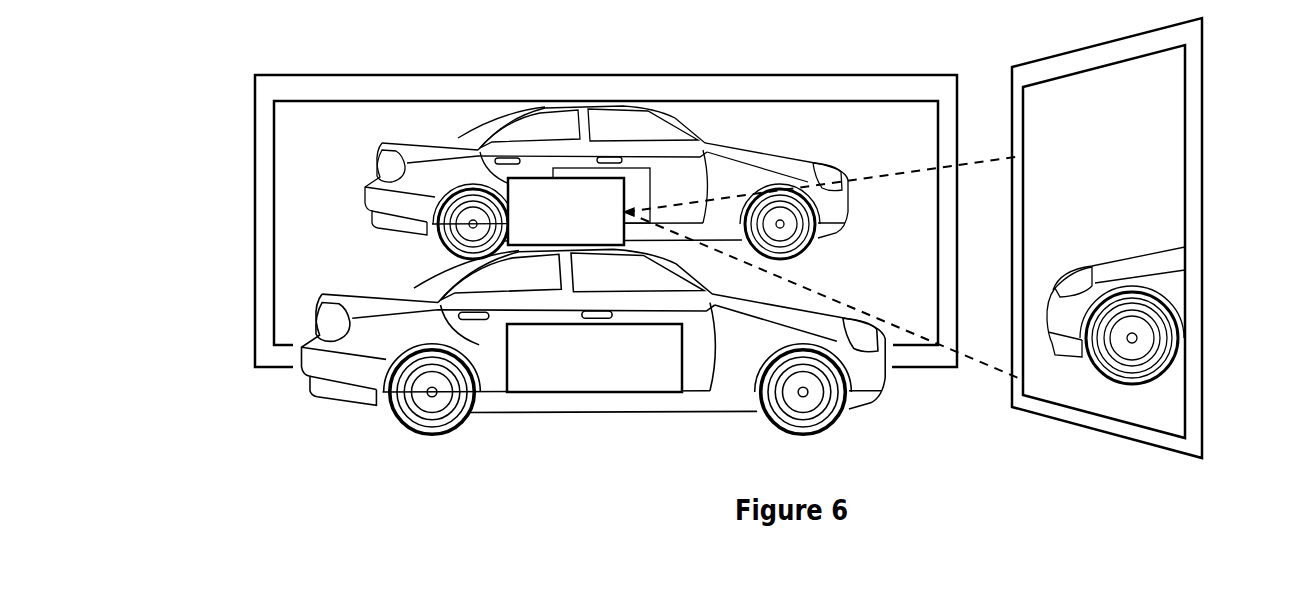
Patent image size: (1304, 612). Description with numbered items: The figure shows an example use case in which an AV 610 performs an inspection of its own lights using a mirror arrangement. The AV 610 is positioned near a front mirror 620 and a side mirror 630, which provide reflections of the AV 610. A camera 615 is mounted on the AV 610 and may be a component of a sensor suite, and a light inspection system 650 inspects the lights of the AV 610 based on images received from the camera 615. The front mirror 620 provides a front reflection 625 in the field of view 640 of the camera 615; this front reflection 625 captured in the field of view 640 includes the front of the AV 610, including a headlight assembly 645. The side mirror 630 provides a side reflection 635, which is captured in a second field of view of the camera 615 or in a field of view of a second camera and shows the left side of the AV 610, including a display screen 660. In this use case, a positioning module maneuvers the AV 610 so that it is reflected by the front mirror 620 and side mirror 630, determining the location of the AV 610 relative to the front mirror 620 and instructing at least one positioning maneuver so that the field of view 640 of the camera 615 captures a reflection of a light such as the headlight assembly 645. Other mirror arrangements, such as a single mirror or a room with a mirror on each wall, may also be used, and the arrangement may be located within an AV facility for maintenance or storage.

The AV 610 is at (420, 337).
The camera 615 is at (551, 236).
The front mirror 620 is at (1141, 117).
The front reflection 625 is at (1172, 278).
The side mirror 630 is at (305, 283).
The side reflection 635 is at (427, 160).
The field of view 640 is at (892, 207).
The headlight assembly 645 is at (1075, 278).
The light inspection system 650 is at (651, 384).
The display screen 660 is at (593, 170).